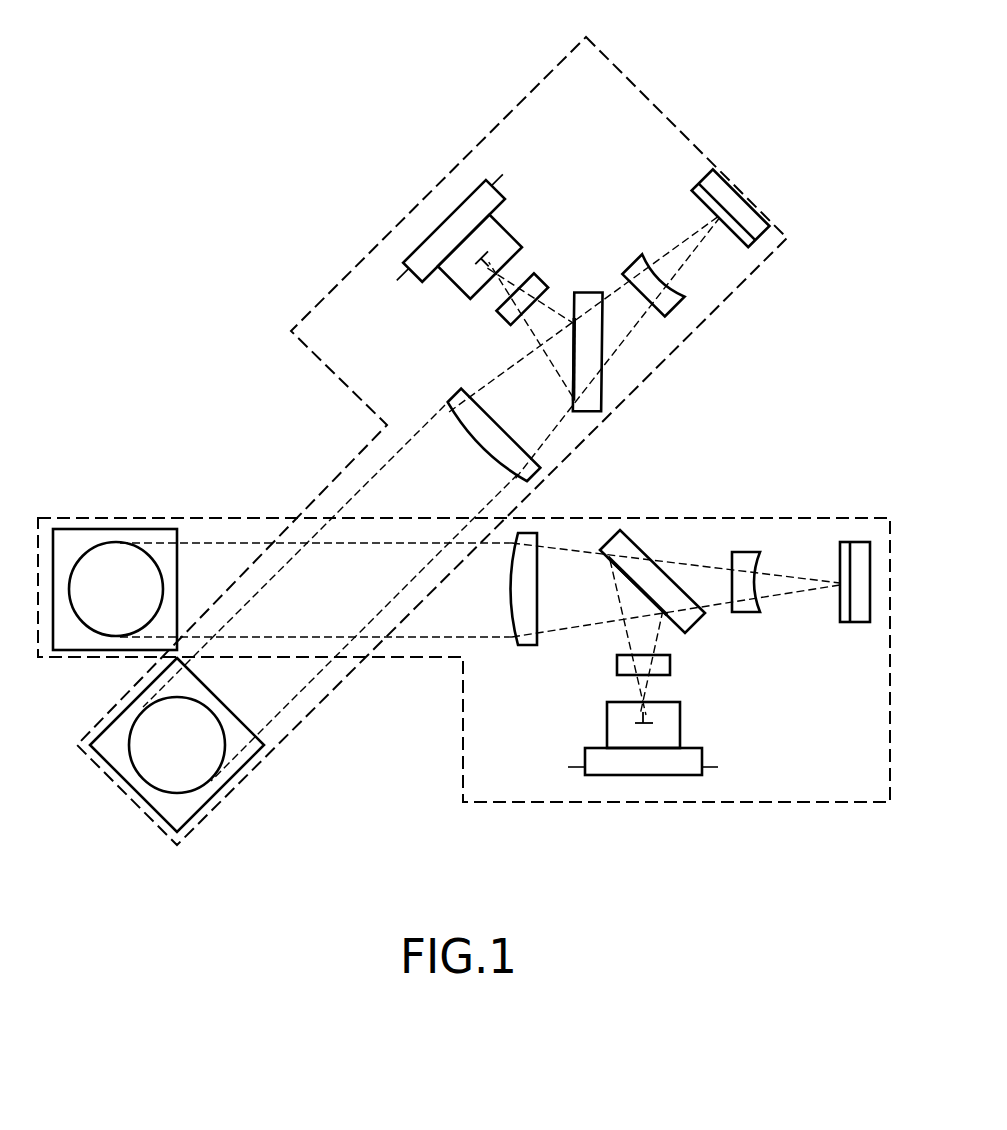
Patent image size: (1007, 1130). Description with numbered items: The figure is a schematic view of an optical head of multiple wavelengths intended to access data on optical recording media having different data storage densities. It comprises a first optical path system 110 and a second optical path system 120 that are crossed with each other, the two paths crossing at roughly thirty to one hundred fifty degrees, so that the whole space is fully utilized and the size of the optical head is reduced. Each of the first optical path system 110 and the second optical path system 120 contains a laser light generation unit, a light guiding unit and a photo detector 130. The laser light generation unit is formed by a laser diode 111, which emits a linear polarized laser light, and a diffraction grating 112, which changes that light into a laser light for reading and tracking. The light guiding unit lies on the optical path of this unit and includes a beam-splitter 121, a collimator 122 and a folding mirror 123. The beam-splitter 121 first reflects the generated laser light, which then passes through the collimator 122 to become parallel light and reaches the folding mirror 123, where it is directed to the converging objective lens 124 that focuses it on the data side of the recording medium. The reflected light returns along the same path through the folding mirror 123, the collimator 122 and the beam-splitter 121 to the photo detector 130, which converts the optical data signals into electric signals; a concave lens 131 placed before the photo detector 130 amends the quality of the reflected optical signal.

The first optical path system 110 is at (799, 514).
The second optical path system 120 is at (642, 84).
The laser diode 111 is at (614, 729).
The diffraction grating 112 is at (617, 663).
The beam-splitter 121 is at (637, 545).
The collimator 122 is at (520, 600).
The folding mirror 123 is at (88, 547).
The converging objective lens 124 is at (125, 566).
The photo detector 130 is at (862, 616).
The concave lens 131 is at (743, 548).